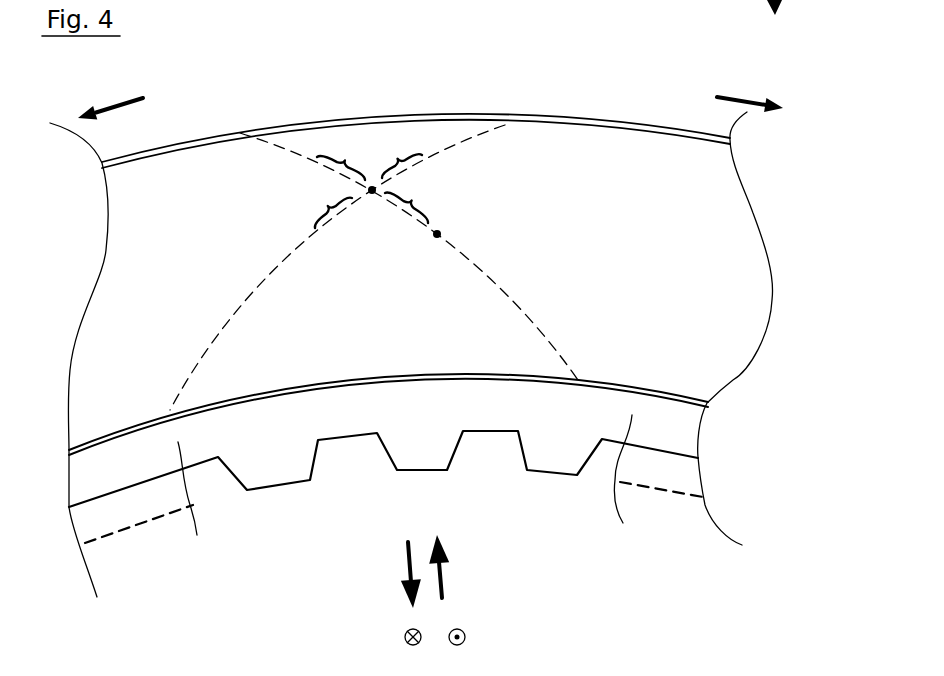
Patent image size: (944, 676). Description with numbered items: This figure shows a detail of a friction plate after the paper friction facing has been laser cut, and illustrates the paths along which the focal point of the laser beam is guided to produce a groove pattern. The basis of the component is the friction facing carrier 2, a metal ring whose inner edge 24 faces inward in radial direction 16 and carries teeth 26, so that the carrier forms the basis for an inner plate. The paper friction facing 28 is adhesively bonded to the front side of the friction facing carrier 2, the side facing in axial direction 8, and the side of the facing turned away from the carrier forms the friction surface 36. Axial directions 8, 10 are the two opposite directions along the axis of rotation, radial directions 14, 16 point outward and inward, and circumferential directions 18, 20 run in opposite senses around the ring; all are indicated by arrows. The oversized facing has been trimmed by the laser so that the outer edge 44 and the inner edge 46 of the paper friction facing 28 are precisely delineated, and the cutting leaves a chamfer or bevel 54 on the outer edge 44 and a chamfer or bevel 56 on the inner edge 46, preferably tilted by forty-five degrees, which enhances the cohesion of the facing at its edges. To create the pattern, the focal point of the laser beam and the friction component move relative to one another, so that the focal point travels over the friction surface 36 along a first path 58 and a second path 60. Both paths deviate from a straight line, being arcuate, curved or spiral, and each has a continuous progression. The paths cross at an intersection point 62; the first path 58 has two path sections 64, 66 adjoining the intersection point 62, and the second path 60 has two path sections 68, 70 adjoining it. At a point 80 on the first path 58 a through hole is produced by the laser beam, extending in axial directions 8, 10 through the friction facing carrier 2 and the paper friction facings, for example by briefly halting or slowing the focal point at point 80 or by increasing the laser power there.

The friction facing carrier 2 is at (98, 467).
The axial direction 8 is at (466, 636).
The axial direction 10 is at (405, 636).
The radial direction 14 is at (440, 575).
The radial direction 16 is at (408, 563).
The circumferential direction 18 is at (118, 96).
The circumferential direction 20 is at (733, 95).
The inner edge 24 is at (117, 488).
The teeth 26 is at (540, 475).
The paper friction facing 28 is at (153, 217).
The friction surface 36 is at (176, 123).
The outer edge 44 is at (450, 115).
The inner edge 46 is at (200, 413).
The chamfer or bevel 54 is at (625, 125).
The chamfer or bevel 56 is at (247, 398).
The first path 58 is at (500, 288).
The second path 60 is at (243, 302).
The intersection point 62 is at (372, 186).
The path section 64 is at (408, 201).
The path section 66 is at (341, 158).
The path section 68 is at (326, 205).
The path section 70 is at (402, 157).
The point 80 is at (440, 231).